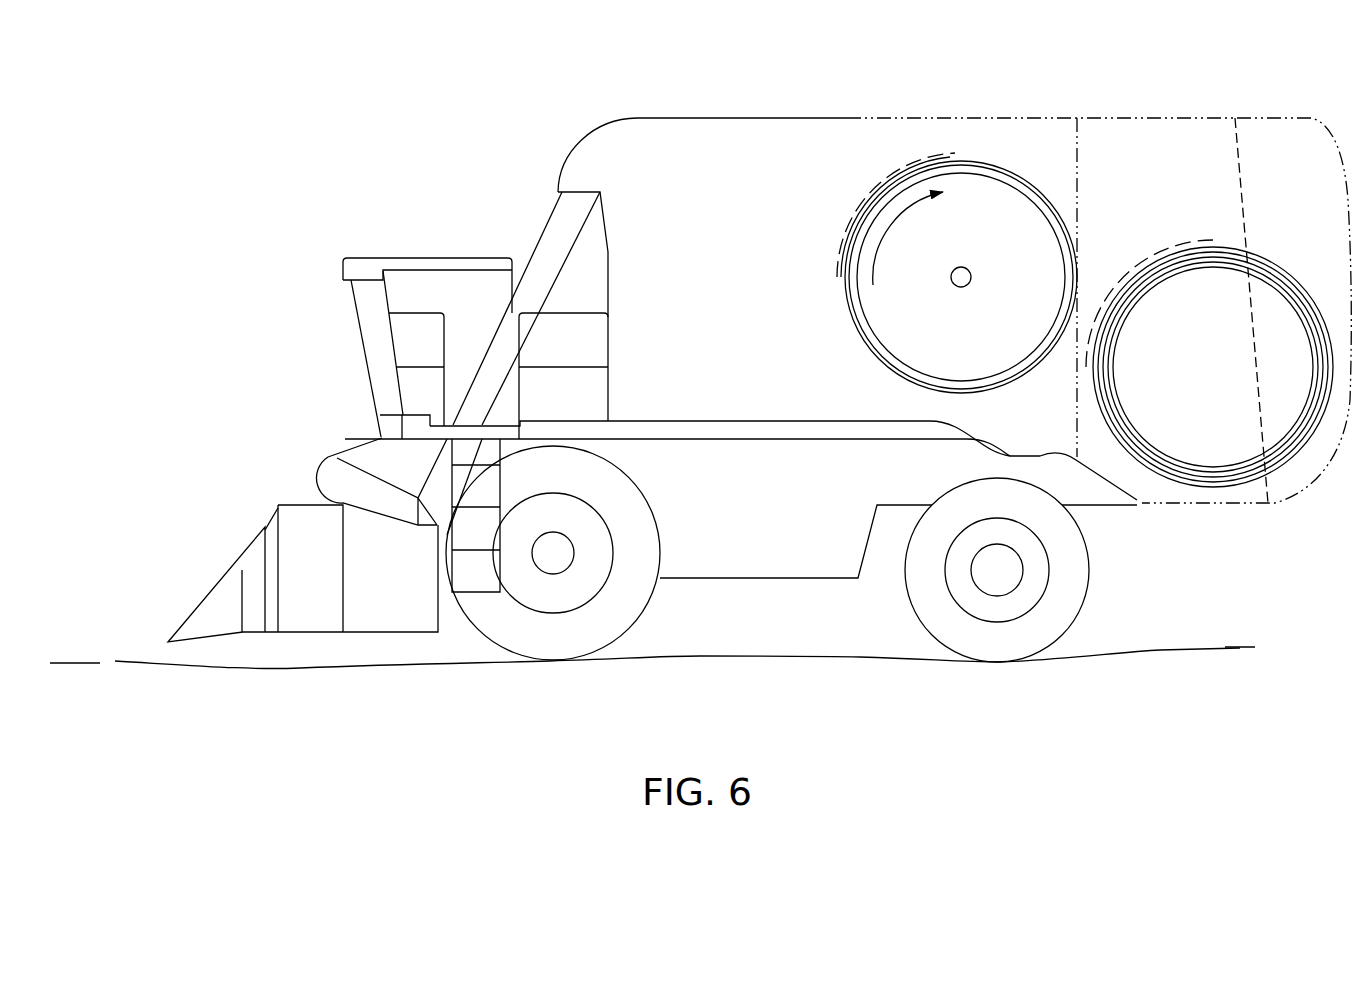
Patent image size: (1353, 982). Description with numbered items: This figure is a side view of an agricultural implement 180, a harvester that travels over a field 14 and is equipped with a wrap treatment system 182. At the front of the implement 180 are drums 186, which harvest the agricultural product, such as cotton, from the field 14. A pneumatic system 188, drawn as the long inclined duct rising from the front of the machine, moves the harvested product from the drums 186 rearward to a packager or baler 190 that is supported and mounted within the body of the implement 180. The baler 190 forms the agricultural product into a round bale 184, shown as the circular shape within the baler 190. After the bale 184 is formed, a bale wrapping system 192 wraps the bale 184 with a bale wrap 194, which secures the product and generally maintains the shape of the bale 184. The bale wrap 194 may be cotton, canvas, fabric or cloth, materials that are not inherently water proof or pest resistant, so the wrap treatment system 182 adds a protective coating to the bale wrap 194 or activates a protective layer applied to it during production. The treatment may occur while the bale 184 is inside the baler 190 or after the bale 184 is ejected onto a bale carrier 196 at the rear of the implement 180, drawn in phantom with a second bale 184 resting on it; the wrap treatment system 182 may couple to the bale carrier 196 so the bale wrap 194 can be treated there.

The field 14 is at (652, 657).
The agricultural implement 180 is at (322, 110).
The wrap treatment system 182 is at (1262, 246).
The bale 184 is at (978, 248).
The drums 186 is at (295, 520).
The pneumatic system 188 is at (545, 270).
The baler 190 is at (1037, 161).
The bale wrapping system 192 is at (850, 160).
The bale wrap 194 is at (1063, 233).
The bale carrier 196 is at (1224, 534).